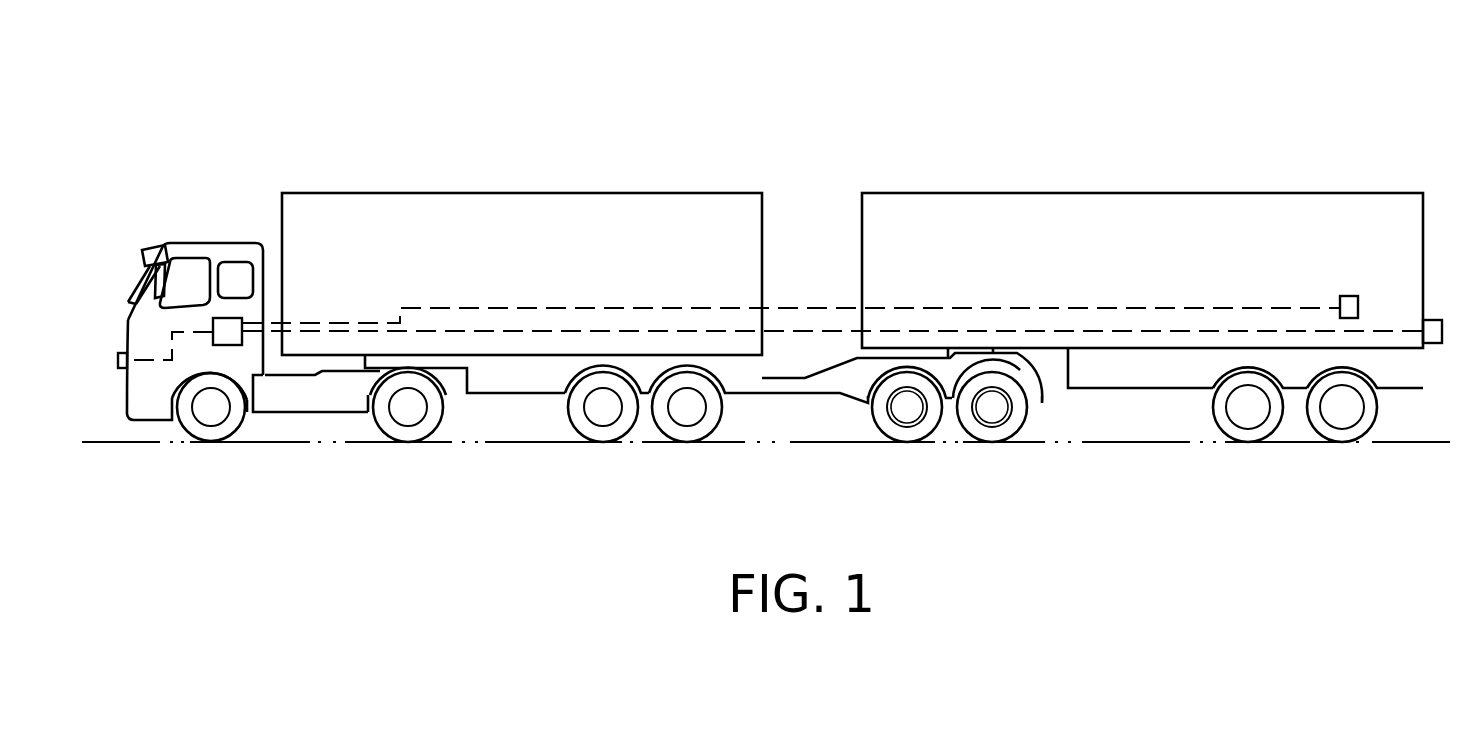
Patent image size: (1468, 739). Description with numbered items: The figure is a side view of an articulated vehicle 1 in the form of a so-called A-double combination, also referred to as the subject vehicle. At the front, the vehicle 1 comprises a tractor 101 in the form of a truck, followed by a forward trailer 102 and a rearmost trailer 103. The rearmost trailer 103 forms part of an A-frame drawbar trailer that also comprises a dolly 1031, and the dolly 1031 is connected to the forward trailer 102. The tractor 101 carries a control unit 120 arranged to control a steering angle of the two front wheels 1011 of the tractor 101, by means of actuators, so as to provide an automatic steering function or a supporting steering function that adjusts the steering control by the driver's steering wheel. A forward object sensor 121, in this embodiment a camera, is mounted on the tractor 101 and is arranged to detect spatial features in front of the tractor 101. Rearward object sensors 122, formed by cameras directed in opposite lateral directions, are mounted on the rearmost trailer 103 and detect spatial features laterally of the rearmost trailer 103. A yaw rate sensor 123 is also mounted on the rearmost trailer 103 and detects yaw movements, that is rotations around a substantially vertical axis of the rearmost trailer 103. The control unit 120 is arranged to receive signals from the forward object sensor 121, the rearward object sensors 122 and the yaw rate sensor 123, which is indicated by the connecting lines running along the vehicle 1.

The vehicle 1 is at (367, 103).
The tractor 101 is at (192, 241).
The forward trailer 102 is at (518, 193).
The rearmost trailer 103 is at (1190, 193).
The control unit 120 is at (235, 318).
The forward object sensor 121 is at (118, 368).
The rearward object sensor 122 is at (1431, 345).
The yaw rate sensor 123 is at (1346, 295).
The front wheel 1011 is at (214, 405).
The dolly 1031 is at (950, 403).